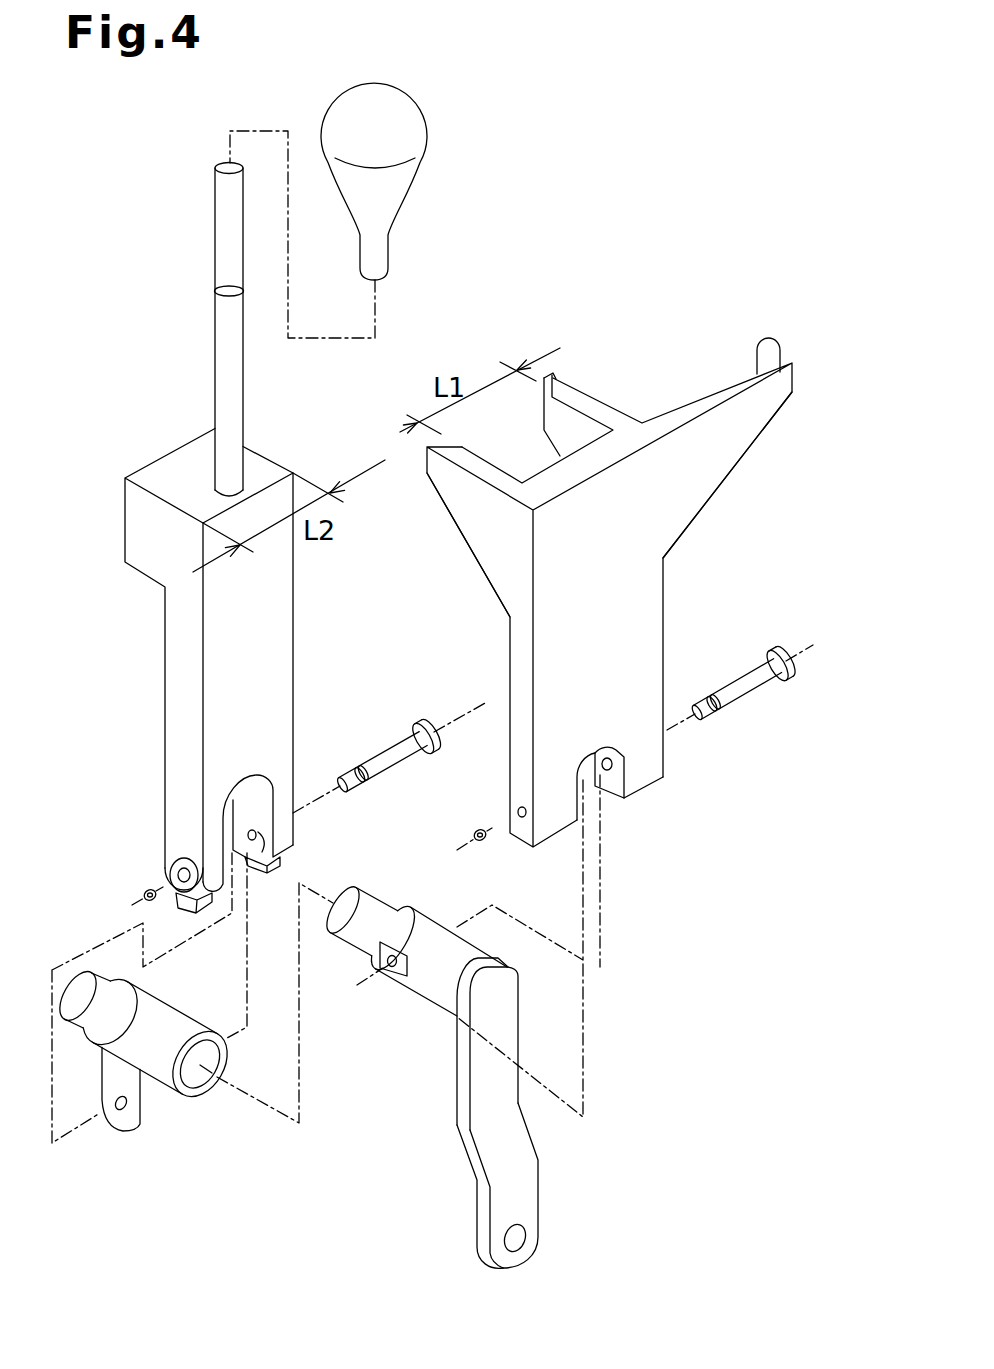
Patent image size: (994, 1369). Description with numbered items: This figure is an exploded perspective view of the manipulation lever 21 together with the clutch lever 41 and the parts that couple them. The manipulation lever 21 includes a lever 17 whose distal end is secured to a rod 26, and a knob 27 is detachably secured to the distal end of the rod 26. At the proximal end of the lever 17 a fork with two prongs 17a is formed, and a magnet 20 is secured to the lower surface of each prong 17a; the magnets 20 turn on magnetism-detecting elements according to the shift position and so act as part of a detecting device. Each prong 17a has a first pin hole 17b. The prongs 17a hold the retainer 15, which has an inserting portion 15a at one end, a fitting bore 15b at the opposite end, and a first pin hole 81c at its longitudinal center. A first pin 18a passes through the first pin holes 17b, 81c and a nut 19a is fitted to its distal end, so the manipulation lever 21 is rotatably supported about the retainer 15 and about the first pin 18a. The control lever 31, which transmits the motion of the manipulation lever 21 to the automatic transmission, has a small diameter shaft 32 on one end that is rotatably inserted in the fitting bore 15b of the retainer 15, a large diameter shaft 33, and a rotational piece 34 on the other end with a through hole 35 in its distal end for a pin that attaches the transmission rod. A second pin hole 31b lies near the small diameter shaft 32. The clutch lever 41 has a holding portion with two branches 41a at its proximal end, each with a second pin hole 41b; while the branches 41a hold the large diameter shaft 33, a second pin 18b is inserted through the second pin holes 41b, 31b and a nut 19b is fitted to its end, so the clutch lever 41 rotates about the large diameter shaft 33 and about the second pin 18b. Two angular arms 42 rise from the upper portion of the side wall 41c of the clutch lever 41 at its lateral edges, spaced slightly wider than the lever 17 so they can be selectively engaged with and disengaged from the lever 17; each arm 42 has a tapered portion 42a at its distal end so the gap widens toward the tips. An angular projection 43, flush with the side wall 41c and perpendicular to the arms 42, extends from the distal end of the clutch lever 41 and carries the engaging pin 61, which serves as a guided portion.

The retainer 15 is at (157, 998).
The inserting portion 15a is at (80, 973).
The fitting bore 15b is at (198, 1082).
The lever 17 is at (294, 690).
The prongs 17a is at (165, 786).
The first pin hole 17b is at (281, 858).
The first pin 18a is at (404, 752).
The second pin 18b is at (756, 680).
The nut 19a is at (147, 891).
The nut 19b is at (481, 829).
The magnet 20 is at (268, 875).
The manipulation lever 21 is at (190, 180).
The rod 26 is at (243, 414).
The knob 27 is at (421, 110).
The control lever 31 is at (519, 1008).
The second pin hole 31b is at (392, 966).
The small diameter shaft 32 is at (366, 893).
The large diameter shaft 33 is at (437, 923).
The rotational piece 34 is at (539, 1177).
The through hole 35 is at (521, 1252).
The clutch lever 41 is at (664, 590).
The branches 41a is at (664, 760).
The second pin hole 41b is at (526, 809).
The side wall 41c is at (507, 628).
The angular arms 42 is at (558, 452).
The tapered portion 42a is at (556, 378).
The angular projection 43 is at (774, 402).
The engaging pin 61 is at (800, 334).
The first pin hole 81c is at (124, 1107).